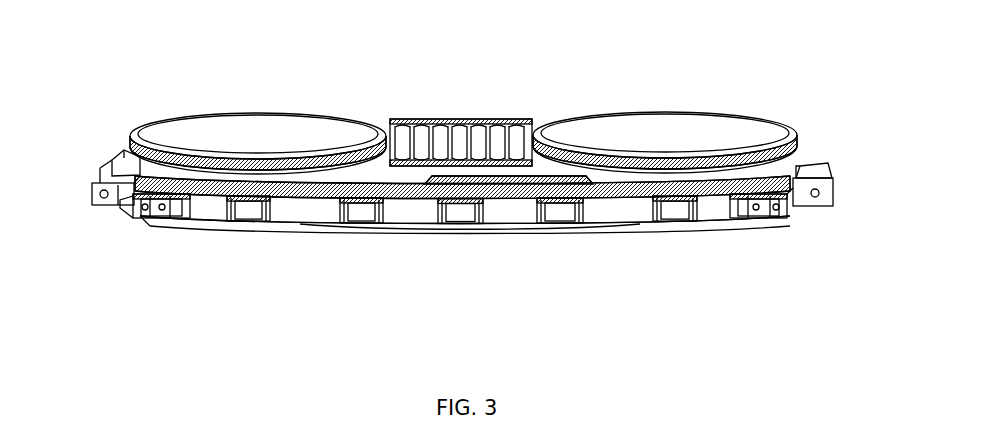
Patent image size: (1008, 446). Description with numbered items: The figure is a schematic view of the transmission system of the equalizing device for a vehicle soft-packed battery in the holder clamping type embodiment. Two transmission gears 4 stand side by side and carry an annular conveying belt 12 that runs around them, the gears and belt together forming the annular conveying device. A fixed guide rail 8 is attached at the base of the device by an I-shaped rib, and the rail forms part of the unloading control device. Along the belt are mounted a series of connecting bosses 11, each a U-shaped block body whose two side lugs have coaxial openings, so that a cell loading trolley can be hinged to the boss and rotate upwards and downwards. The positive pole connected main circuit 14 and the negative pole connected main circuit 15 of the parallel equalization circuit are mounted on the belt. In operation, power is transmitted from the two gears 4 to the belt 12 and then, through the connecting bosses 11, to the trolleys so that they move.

The transmission gear 4 is at (653, 140).
The fixed guide rail 8 is at (110, 163).
The connecting boss 11 is at (267, 236).
The annular conveying belt 12 is at (450, 122).
The positive pole connected main circuit 14 is at (437, 198).
The negative pole connected main circuit 15 is at (512, 220).